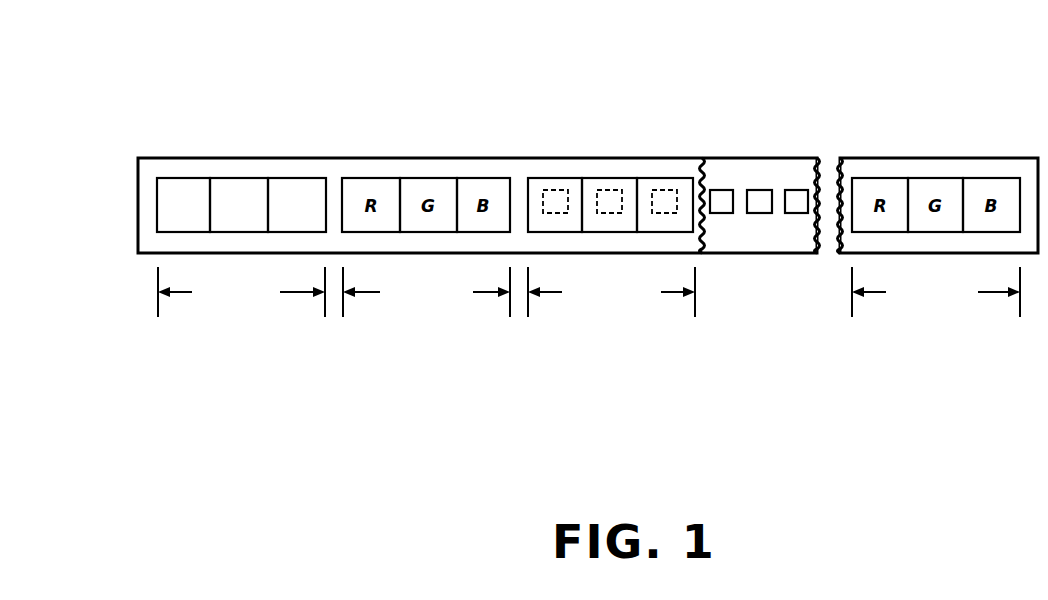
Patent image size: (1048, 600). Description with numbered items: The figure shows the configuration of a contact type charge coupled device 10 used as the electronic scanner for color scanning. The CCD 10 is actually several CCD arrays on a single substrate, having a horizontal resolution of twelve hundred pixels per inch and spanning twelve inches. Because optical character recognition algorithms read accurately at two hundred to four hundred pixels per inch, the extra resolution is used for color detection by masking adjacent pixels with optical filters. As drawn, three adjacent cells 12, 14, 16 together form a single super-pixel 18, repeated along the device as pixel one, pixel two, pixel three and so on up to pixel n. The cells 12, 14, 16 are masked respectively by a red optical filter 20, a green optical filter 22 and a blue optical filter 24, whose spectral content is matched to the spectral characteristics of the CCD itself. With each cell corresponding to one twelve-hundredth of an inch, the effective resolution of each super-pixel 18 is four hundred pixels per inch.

The contact type CCD 10 is at (452, 152).
The first adjacent cell 12 is at (556, 190).
The second adjacent cell 14 is at (608, 190).
The third adjacent cell 16 is at (665, 190).
The super-pixel 18 is at (248, 308).
The red optical filter 20 is at (177, 180).
The green optical filter 22 is at (245, 182).
The blue optical filter 24 is at (295, 182).